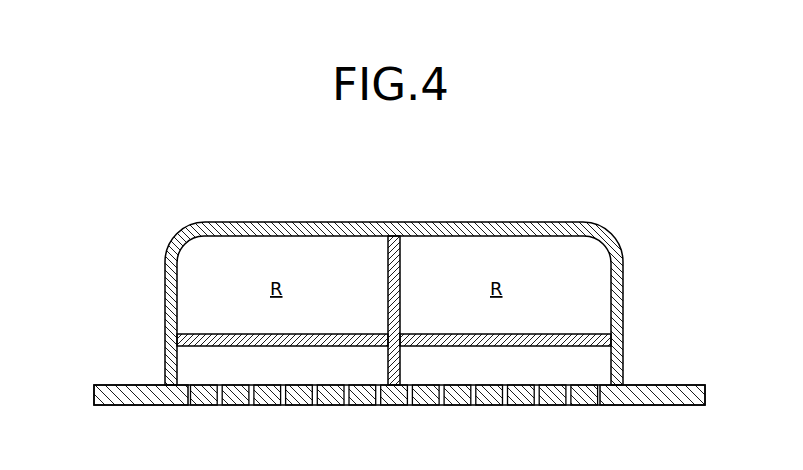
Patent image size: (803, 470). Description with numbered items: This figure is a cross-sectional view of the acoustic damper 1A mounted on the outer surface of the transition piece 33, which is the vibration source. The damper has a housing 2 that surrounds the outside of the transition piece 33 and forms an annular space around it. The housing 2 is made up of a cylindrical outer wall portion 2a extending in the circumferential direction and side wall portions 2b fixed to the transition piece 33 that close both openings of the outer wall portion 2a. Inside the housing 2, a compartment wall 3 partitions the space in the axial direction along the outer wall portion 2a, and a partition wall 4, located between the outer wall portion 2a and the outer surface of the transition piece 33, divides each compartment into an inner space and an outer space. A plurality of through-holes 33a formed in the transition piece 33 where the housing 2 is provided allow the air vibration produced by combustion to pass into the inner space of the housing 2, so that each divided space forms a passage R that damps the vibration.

The acoustic damper 1A is at (394, 272).
The housing 2 is at (393, 272).
The outer wall portion 2a is at (428, 222).
The side wall portion 2b is at (165, 290).
The compartment wall 3 is at (388, 268).
The partition wall 4 is at (234, 334).
The transition piece 33 is at (399, 404).
The through-holes 33a is at (283, 405).